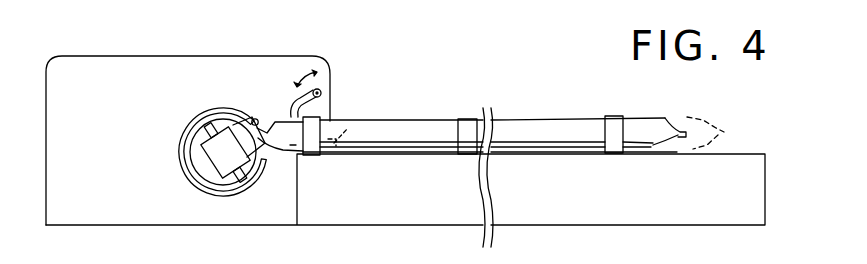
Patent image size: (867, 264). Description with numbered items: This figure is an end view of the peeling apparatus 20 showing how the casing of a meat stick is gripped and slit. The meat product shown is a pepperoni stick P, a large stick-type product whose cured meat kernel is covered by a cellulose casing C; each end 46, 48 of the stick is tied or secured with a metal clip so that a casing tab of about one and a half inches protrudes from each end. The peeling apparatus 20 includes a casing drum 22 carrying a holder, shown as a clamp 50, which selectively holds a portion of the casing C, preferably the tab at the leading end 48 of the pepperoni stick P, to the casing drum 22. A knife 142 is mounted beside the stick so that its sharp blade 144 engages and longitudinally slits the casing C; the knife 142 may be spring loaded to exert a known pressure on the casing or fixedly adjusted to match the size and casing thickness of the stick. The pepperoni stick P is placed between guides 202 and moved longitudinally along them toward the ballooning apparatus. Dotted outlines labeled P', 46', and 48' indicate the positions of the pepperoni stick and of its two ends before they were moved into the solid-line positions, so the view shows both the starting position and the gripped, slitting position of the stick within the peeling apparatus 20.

The peeling apparatus 20 is at (305, 31).
The casing drum 22 is at (210, 112).
The end of the pepperoni stick 46 is at (676, 162).
The leading end of the pepperoni stick 48 is at (299, 172).
The leading end prior position 48' is at (362, 160).
The clamp 50 is at (257, 175).
The knife 142 is at (323, 103).
The sharp blade 144 is at (272, 126).
The guides 202 is at (467, 150).
The pepperoni stick P is at (490, 159).
The pepperoni stick prior position P' is at (702, 97).
The cellulose casing C is at (340, 118).
The stick end prior position 46' is at (739, 121).